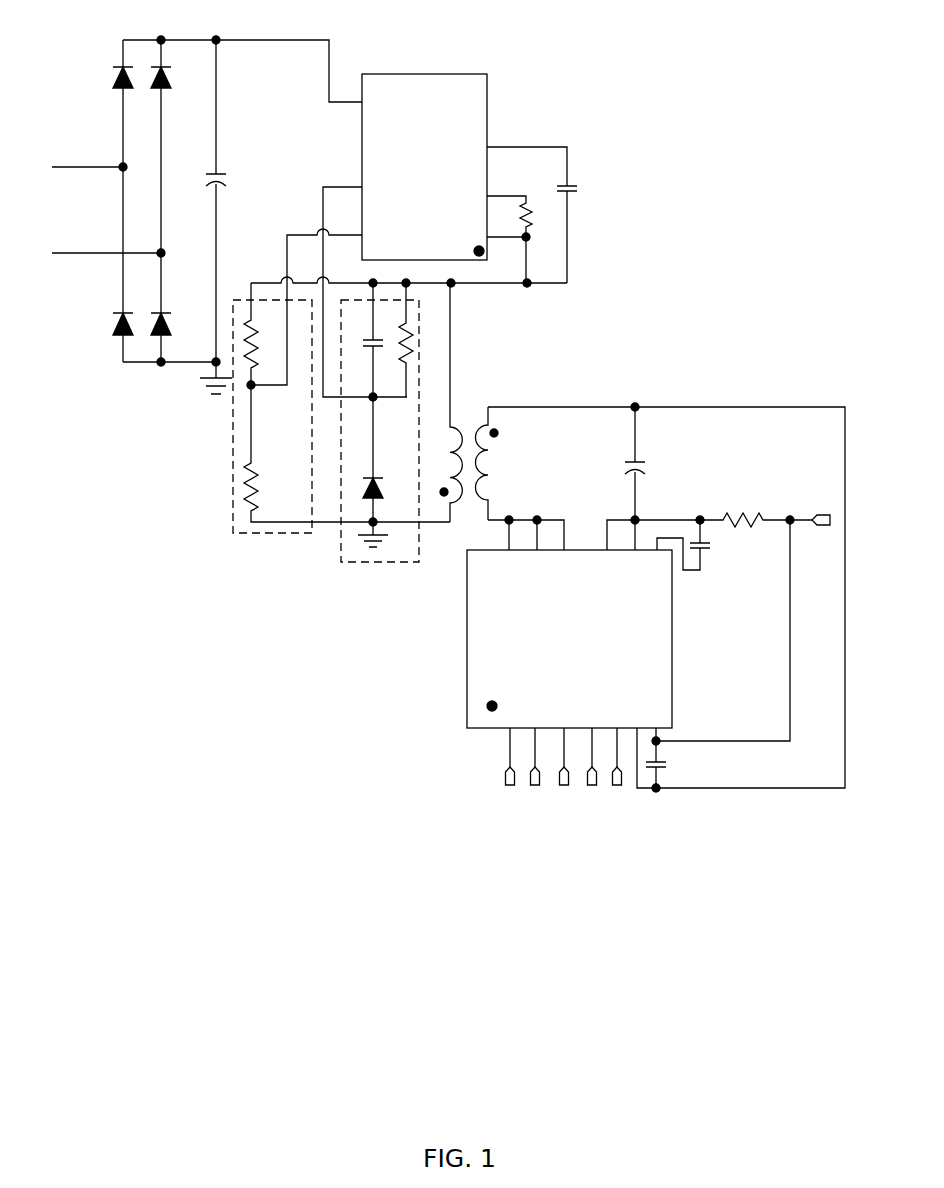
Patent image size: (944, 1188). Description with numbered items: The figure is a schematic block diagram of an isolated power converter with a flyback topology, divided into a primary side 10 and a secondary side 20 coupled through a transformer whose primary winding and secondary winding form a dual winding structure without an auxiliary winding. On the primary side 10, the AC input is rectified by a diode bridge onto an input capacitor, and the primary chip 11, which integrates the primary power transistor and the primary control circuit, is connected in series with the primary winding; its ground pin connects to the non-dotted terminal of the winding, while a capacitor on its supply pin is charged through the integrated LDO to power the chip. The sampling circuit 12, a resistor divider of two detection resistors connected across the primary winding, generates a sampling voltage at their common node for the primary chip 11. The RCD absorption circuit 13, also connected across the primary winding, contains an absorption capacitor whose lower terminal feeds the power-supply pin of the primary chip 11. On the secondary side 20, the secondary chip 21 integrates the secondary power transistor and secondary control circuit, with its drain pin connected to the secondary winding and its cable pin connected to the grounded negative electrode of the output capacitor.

The primary side 10 is at (563, 93).
The primary chip 11 is at (489, 93).
The sampling circuit 12 is at (250, 533).
The RCD absorption circuit 13 is at (382, 562).
The secondary side 20 is at (757, 363).
The secondary chip 21 is at (672, 627).